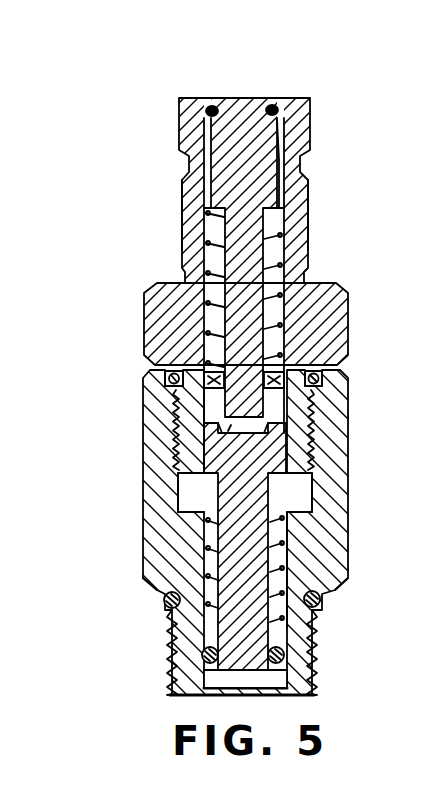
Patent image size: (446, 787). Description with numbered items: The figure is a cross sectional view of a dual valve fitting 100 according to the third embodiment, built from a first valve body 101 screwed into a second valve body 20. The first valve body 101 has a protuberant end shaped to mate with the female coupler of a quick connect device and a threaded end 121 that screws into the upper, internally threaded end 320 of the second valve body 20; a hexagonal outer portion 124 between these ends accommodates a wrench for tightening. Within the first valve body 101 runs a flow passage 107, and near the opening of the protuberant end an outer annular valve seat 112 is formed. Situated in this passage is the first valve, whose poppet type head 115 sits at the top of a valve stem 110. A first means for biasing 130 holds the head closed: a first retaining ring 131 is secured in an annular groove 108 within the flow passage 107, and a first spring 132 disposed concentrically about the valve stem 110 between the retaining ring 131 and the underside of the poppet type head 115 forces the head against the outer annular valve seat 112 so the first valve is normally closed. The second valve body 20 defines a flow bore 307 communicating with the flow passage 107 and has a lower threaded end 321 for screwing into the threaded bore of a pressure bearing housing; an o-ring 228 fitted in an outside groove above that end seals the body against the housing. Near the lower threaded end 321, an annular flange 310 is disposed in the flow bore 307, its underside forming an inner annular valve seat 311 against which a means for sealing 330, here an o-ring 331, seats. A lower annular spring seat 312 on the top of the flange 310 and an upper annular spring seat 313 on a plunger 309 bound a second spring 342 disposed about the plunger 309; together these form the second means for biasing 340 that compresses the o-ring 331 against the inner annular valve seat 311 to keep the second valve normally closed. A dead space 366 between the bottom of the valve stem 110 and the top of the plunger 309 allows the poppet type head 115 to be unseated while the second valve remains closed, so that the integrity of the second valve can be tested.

The dual valve fitting 100 is at (163, 113).
The valve body 20 is at (180, 193).
The first valve body 101 is at (312, 112).
The flow passage 107 is at (277, 197).
The annular groove 108 is at (302, 390).
The valve stem 110 is at (260, 157).
The outer annular valve seat 112 is at (228, 98).
The poppet type head 115 is at (253, 98).
The threaded end 121 is at (178, 428).
The hexagonal outer portion 124 is at (148, 328).
The first means for biasing 130 is at (190, 269).
The first retaining ring 131 is at (322, 382).
The first spring 132 is at (280, 237).
The o-ring 228 is at (322, 598).
The flow bore 307 is at (300, 494).
The plunger 309 is at (232, 538).
The annular flange 310 is at (295, 632).
The inner annular valve seat 311 is at (292, 683).
The lower annular spring seat 312 is at (163, 610).
The upper annular spring seat 313 is at (292, 520).
The internally threaded end 320 is at (312, 458).
The lower threaded end 321 is at (315, 648).
The means for sealing 330 is at (196, 655).
The o-ring 331 is at (195, 683).
The second means for biasing 340 is at (201, 558).
The second spring 342 is at (290, 560).
The dead space 366 is at (195, 476).